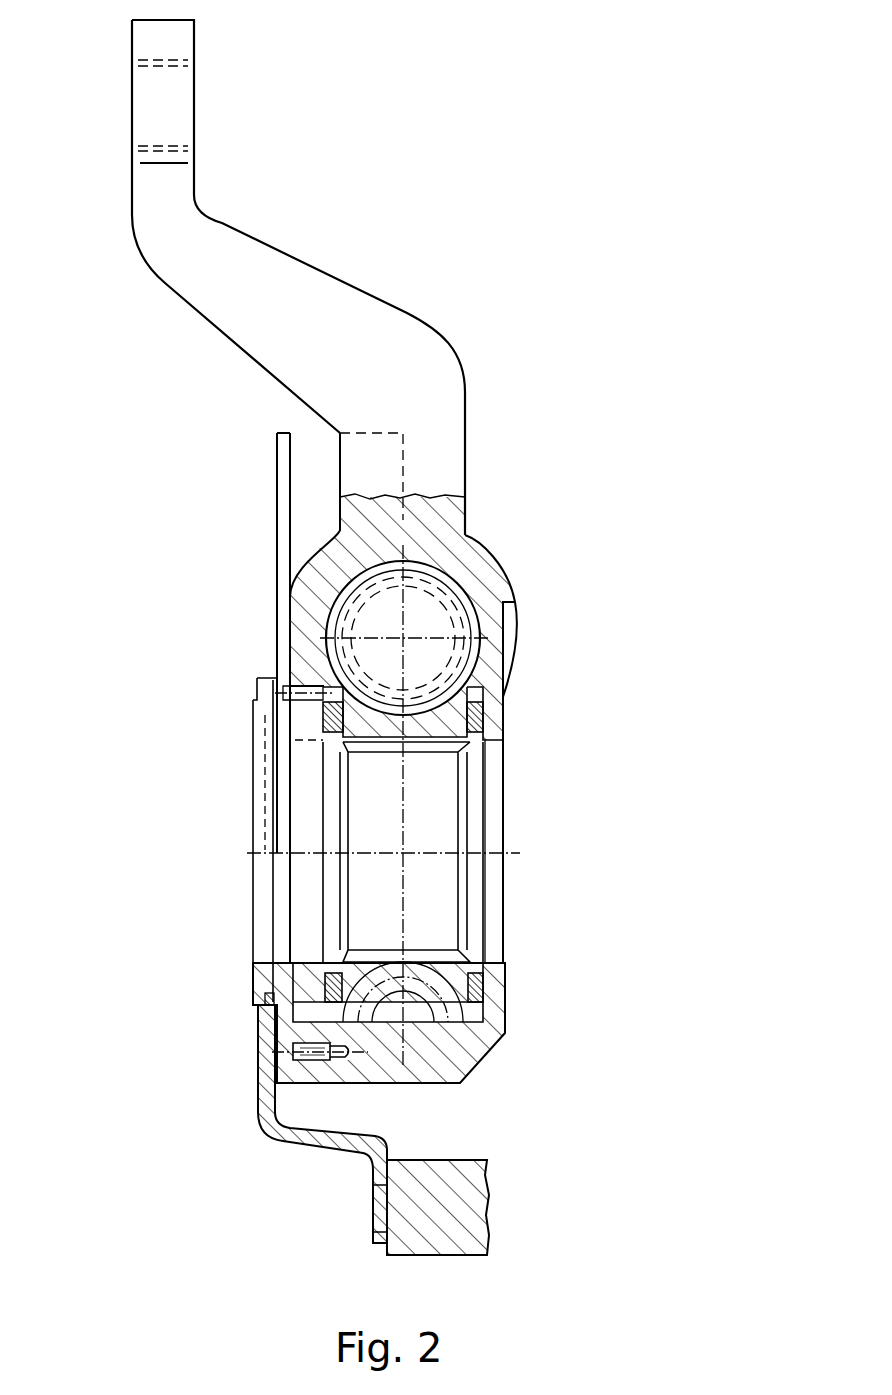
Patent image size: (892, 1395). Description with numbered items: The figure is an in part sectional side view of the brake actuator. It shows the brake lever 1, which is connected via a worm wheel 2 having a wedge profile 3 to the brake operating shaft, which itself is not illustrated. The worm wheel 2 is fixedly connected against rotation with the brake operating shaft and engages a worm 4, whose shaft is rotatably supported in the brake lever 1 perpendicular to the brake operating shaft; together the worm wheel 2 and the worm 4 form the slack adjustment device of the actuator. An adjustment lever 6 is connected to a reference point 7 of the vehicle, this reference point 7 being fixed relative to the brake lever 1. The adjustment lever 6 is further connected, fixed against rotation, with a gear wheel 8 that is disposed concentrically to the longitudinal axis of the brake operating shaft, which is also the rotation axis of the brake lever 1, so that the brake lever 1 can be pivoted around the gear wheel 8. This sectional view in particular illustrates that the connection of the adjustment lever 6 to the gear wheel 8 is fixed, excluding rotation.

The brake lever 1 is at (338, 290).
The worm wheel 2 is at (462, 720).
The wedge profile 3 is at (440, 748).
The worm 4 is at (450, 602).
The adjustment lever 6 is at (280, 1142).
The reference point 7 is at (473, 1230).
The gear wheel 8 is at (263, 1028).